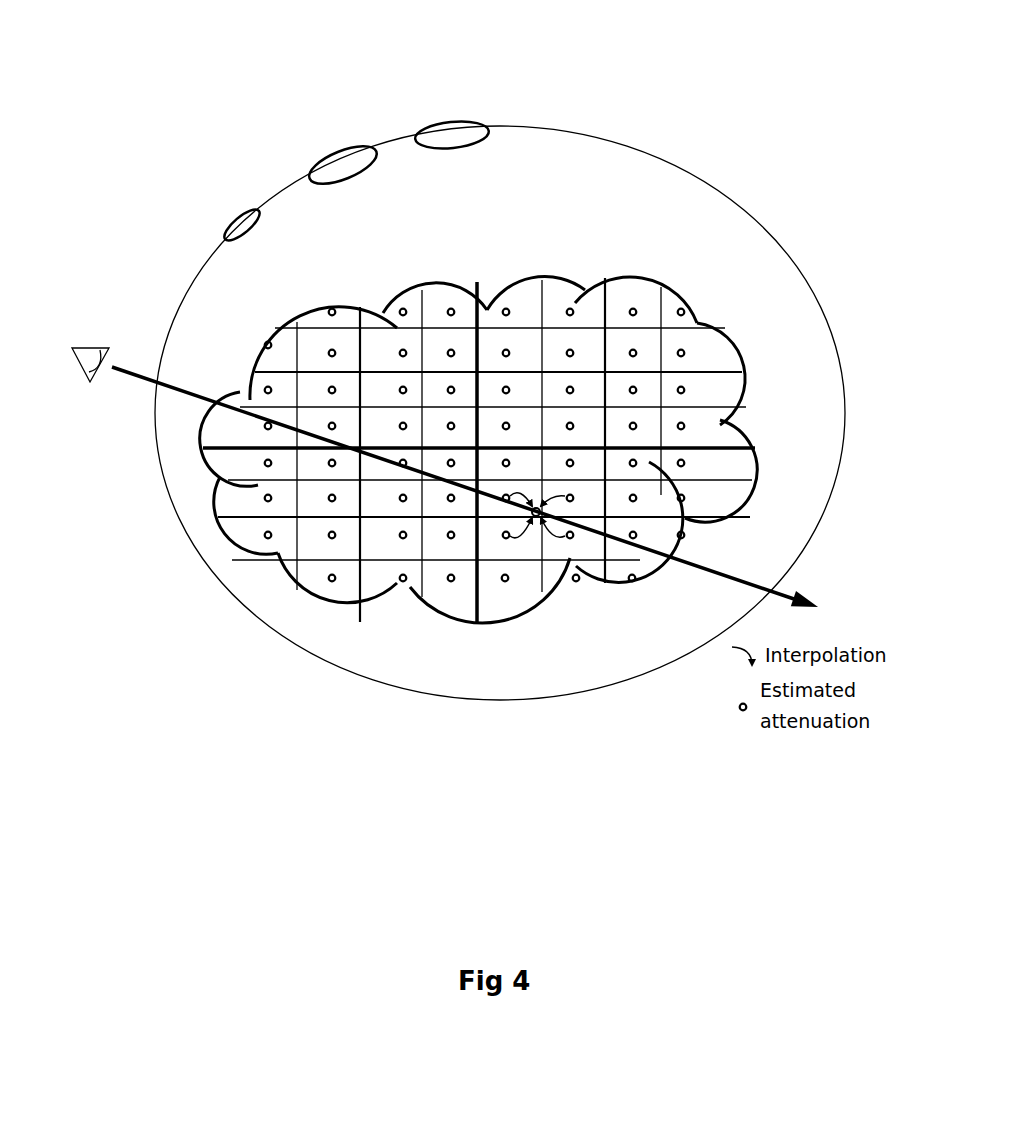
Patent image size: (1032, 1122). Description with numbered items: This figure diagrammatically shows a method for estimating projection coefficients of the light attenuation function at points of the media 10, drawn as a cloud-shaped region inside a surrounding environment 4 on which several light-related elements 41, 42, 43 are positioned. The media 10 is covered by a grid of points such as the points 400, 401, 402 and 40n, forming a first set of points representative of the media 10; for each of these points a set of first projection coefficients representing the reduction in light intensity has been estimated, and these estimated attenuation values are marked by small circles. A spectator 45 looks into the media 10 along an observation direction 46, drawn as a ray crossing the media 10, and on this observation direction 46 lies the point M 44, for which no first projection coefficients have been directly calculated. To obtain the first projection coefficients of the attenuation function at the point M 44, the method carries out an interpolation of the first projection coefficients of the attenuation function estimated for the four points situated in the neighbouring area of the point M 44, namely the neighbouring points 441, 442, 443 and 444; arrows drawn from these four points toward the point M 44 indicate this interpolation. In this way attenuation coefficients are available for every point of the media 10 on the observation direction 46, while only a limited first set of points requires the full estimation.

The object / imaged region 4 is at (745, 212).
The media 10 is at (543, 277).
The first detector element 41 is at (233, 216).
The second detector element 42 is at (330, 150).
The third detector element 43 is at (440, 122).
The point M 44 is at (630, 510).
The spectator 45 is at (100, 385).
The observation direction 46 is at (185, 385).
The first sampling point 400 is at (332, 305).
The second sampling point 401 is at (403, 305).
The third sampling point 402 is at (449, 304).
The n-th sampling point 40n is at (632, 581).
The neighbouring point 441 is at (505, 540).
The neighbouring point 442 is at (568, 540).
The neighbouring point 443 is at (568, 492).
The neighbouring point 444 is at (508, 492).
The point M is at (537, 509).